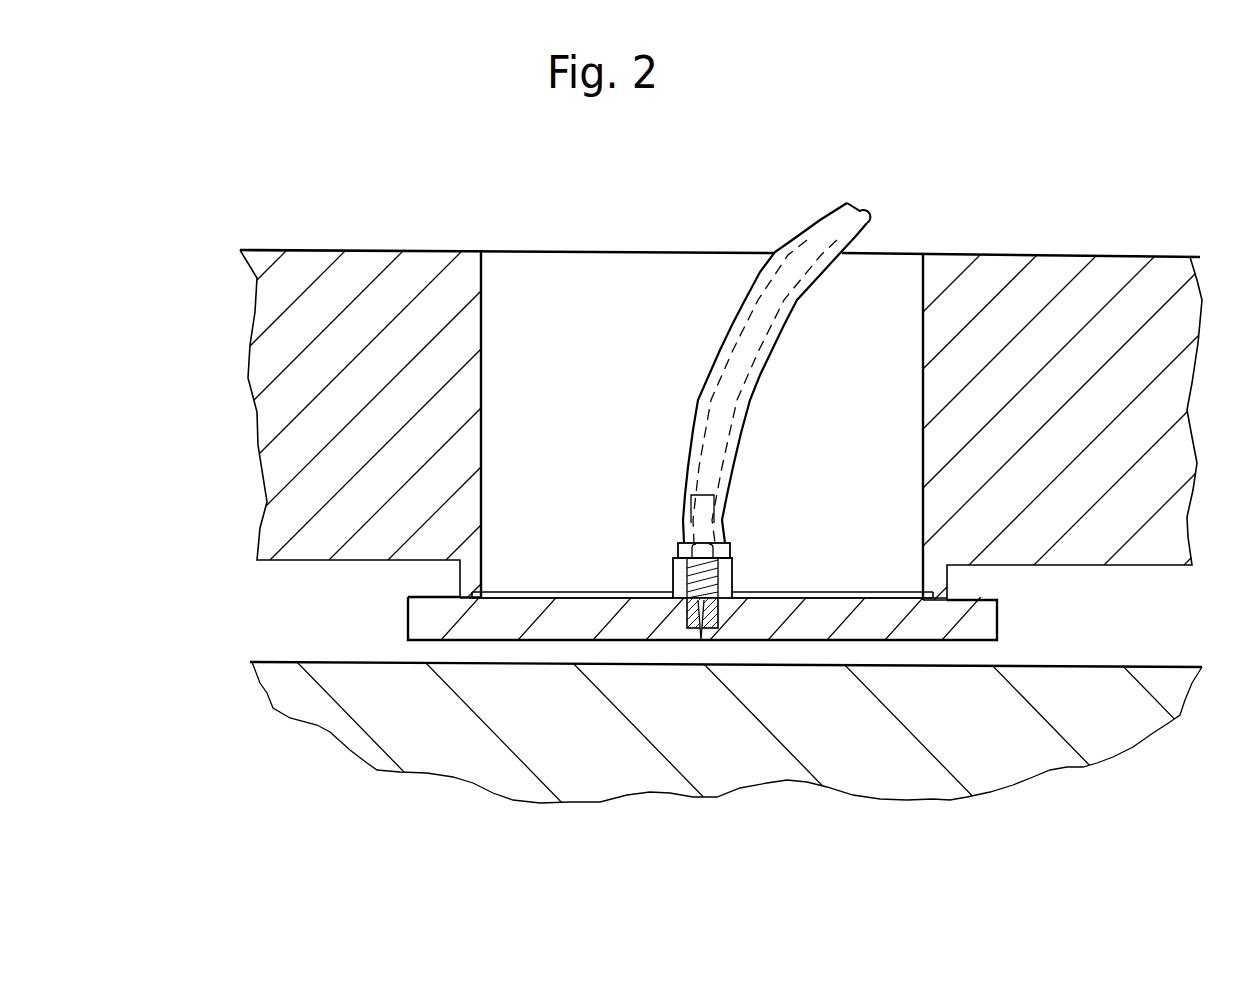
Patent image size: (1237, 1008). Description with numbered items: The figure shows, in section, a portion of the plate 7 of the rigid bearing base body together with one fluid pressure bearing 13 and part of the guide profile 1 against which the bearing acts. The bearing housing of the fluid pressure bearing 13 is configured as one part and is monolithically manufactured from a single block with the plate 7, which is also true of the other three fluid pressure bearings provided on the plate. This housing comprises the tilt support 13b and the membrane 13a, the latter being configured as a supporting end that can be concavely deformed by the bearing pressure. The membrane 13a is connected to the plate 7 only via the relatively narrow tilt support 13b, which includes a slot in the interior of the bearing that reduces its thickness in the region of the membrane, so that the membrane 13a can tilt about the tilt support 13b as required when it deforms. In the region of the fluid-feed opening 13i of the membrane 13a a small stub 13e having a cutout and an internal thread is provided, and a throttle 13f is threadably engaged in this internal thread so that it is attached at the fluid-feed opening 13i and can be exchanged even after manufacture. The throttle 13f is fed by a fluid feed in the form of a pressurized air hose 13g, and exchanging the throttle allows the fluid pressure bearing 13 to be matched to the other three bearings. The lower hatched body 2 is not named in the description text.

The guide profile 1 is at (1178, 747).
The base body 2 is at (300, 683).
The plate 7 is at (338, 270).
The fluid pressure bearing 13 is at (703, 740).
The membrane 13a is at (980, 625).
The tilt support 13b is at (935, 580).
The stub 13e is at (673, 577).
The throttle 13f is at (732, 579).
The pressurized air hose 13g is at (802, 243).
The fluid-feed opening 13i is at (681, 740).